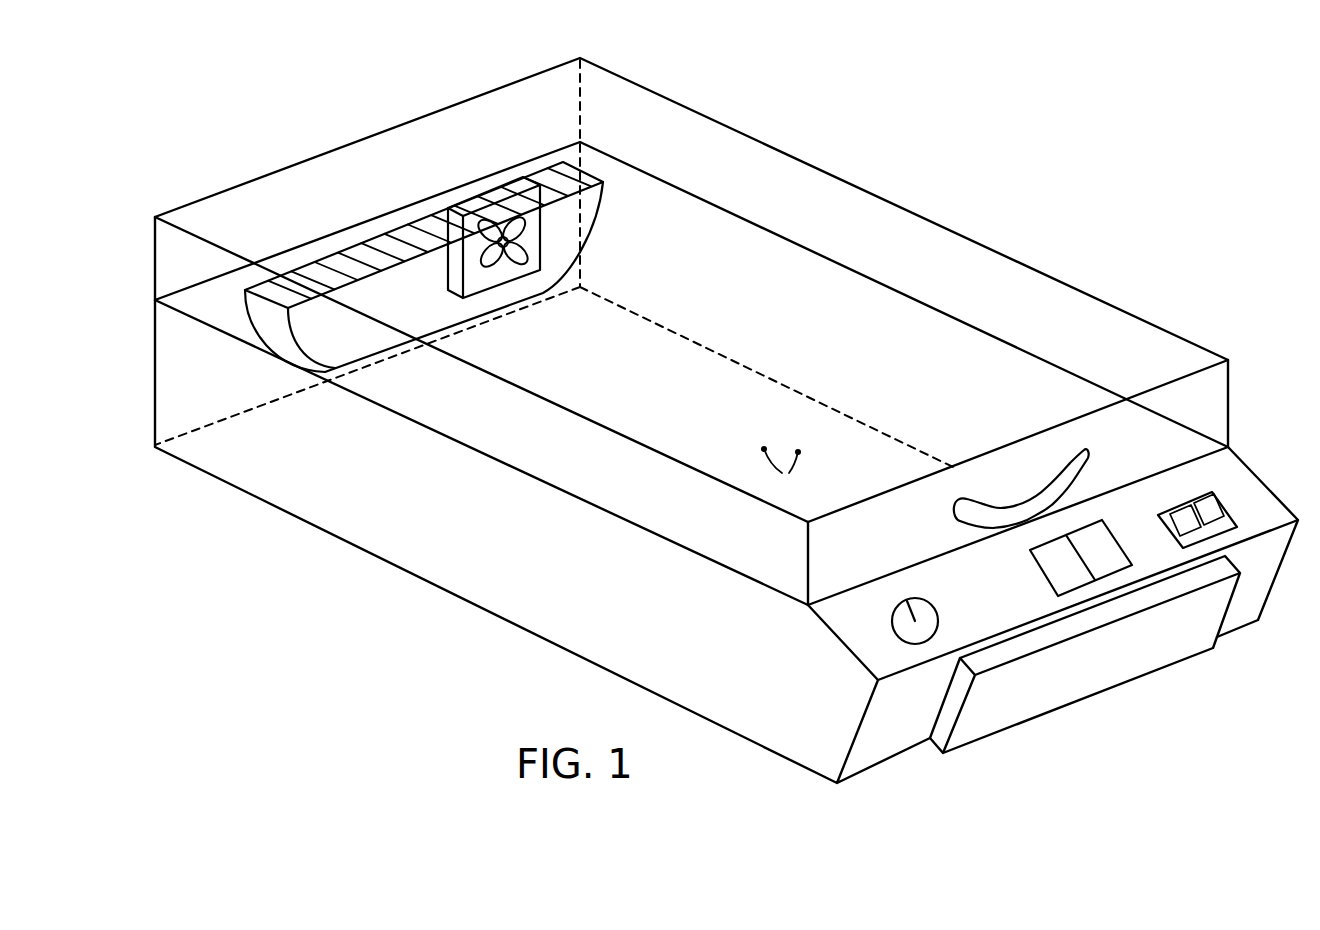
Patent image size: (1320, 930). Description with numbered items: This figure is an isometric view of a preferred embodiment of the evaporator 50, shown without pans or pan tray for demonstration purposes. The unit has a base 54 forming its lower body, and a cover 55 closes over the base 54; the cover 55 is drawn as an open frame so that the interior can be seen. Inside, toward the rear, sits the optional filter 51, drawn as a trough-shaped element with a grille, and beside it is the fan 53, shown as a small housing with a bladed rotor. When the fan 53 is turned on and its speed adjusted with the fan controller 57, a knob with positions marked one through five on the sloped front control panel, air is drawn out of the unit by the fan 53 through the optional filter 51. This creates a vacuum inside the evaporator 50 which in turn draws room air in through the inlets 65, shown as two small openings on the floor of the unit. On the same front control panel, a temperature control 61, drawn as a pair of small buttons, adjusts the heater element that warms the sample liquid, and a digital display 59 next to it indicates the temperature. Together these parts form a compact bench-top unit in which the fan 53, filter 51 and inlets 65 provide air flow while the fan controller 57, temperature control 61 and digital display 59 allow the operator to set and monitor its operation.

The evaporator 50 is at (926, 107).
The filter 51 is at (308, 275).
The fan 53 is at (448, 288).
The base 54 is at (412, 575).
The cover 55 is at (977, 244).
The fan controller 57 is at (904, 657).
The digital display 59 is at (1031, 577).
The temperature control 61 is at (1222, 505).
The inlets 65 is at (781, 475).